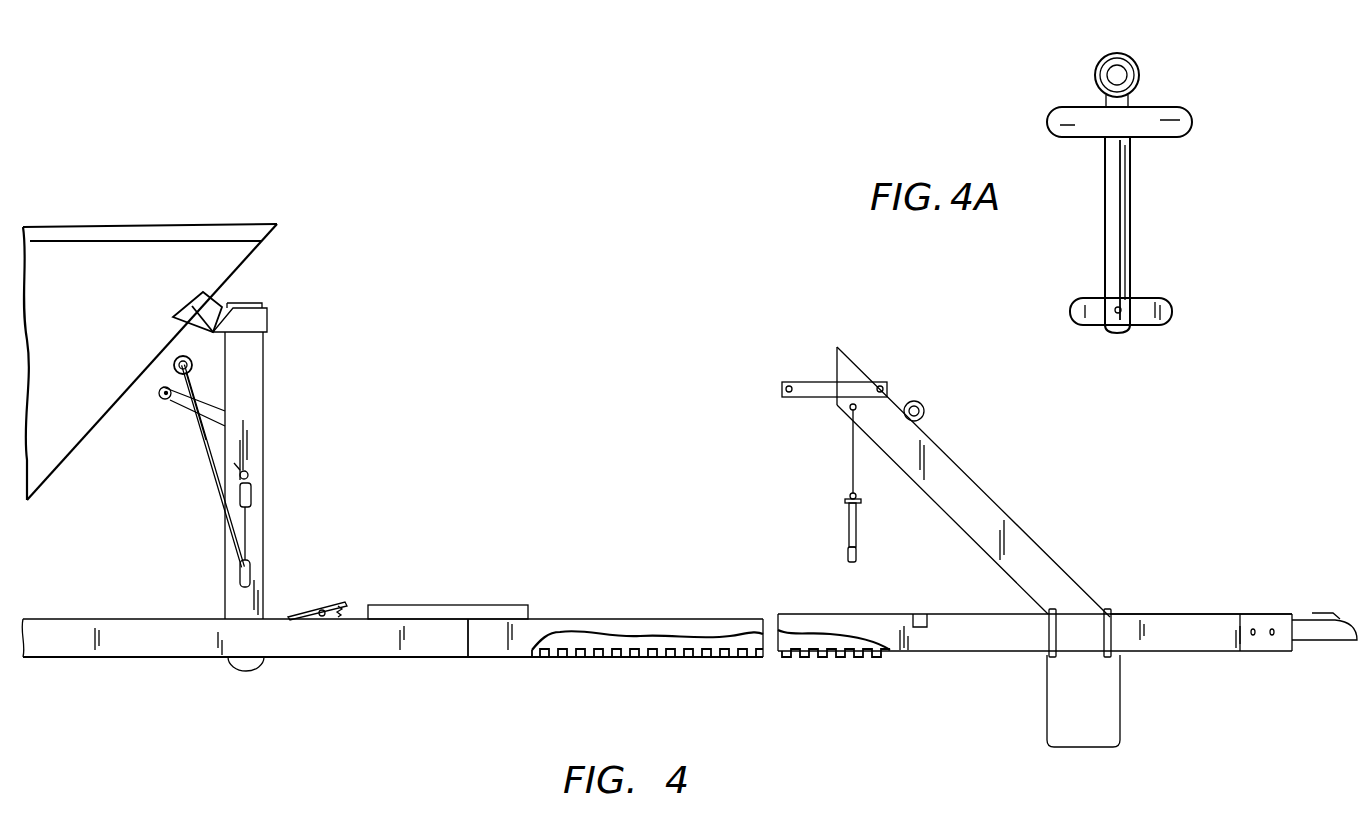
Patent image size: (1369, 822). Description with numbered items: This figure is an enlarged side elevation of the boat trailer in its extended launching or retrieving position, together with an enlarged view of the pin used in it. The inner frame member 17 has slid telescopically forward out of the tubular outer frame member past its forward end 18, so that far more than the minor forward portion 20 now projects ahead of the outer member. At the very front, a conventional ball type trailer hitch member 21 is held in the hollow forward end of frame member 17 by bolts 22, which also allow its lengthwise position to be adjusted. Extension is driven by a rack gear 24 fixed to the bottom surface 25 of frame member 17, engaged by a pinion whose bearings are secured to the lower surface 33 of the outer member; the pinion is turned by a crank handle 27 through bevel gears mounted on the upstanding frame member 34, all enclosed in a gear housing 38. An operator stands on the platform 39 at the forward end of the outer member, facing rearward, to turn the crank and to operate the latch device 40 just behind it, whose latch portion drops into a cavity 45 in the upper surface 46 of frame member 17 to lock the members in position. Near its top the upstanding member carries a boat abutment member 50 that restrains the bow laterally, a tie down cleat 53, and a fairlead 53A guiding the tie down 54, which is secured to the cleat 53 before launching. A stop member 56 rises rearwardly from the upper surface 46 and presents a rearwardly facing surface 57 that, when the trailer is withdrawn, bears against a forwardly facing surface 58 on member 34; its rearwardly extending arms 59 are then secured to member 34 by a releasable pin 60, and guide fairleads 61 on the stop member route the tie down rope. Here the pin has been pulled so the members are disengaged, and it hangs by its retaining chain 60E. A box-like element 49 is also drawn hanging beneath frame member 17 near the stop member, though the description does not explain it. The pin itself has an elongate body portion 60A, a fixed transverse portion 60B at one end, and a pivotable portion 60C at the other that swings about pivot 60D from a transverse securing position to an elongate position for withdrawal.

In FIG. 4, the frame member 17 is at (697, 625).
In FIG. 4, the forward end 18 is at (468, 645).
In FIG. 4, the forward portion 20 is at (1243, 615).
In FIG. 4, the trailer hitch member 21 is at (1315, 641).
In FIG. 4, the bolts 22 is at (1272, 640).
In FIG. 4, the rack gear 24 is at (858, 652).
In FIG. 4, the bottom surface 25 is at (970, 650).
In FIG. 4, the crank handle 27 is at (180, 412).
In FIG. 4, the lower surface 33 is at (200, 657).
In FIG. 4, the upstanding frame member 34 is at (235, 515).
In FIG. 4, the gear housing 38 is at (252, 668).
In FIG. 4, the platform 39 is at (460, 605).
In FIG. 4, the latch device 40 is at (318, 602).
In FIG. 4, the cavity 45 is at (922, 614).
In FIG. 4, the upper surface 46 is at (1163, 592).
In FIG. 4, the box 49 is at (1101, 710).
In FIG. 4, the boat abutment member 50 is at (197, 297).
In FIG. 4, the tie down cleat 53 is at (250, 480).
In FIG. 4, the fairlead 53A is at (252, 578).
In FIG. 4, the tie down 54 is at (200, 462).
In FIG. 4, the stop member 56 is at (1032, 548).
In FIG. 4, the rearwardly facing surface 57 is at (837, 360).
In FIG. 4, the forwardly facing surface 58 is at (263, 380).
In FIG. 4, the rearwardly extending arms 59 is at (830, 391).
In FIG. 4, the releasable pin 60 is at (856, 535).
In FIG. 4A, the releasable pin 60 is at (1096, 218).
In FIG. 4A, the elongate body portion 60A is at (1133, 230).
In FIG. 4A, the fixed transverse portion 60B is at (1150, 137).
In FIG. 4, the pivotable portion 60C is at (856, 560).
In FIG. 4A, the pivotable portion 60C is at (1170, 320).
In FIG. 4A, the pivot 60D is at (1116, 314).
In FIG. 4, the chain 60E is at (853, 460).
In FIG. 4, the guide fairleads 61 is at (923, 416).